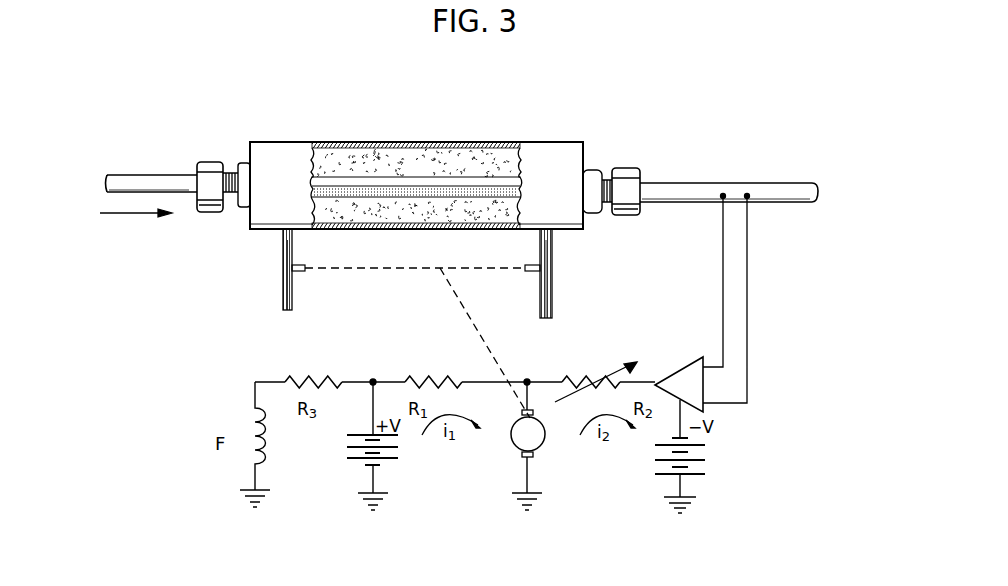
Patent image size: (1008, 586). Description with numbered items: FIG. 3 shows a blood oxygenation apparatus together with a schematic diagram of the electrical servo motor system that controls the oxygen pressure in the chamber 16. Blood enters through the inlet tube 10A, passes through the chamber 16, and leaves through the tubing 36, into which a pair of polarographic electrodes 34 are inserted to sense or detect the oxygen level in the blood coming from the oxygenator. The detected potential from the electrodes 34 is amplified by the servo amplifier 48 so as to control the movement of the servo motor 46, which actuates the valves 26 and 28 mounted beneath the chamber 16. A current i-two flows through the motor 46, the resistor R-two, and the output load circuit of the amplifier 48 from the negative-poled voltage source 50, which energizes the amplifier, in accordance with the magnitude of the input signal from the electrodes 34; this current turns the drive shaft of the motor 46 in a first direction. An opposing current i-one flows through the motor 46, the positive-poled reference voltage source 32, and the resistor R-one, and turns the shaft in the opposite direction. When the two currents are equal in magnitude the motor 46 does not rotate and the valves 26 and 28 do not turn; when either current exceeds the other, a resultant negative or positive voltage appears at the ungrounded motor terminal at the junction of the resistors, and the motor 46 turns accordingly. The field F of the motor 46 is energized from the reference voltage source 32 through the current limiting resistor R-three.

The inlet conduit 10A is at (138, 182).
The chamber 16 is at (467, 117).
The valve 26 is at (283, 268).
The valve 28 is at (555, 270).
The polarographic electrodes 34 is at (733, 192).
The tubing 36 is at (803, 190).
The positive-poled reference voltage source 32 is at (343, 425).
The servo motor 46 is at (525, 436).
The servo amplifier 48 is at (686, 380).
The negative-poled voltage source 50 is at (710, 435).